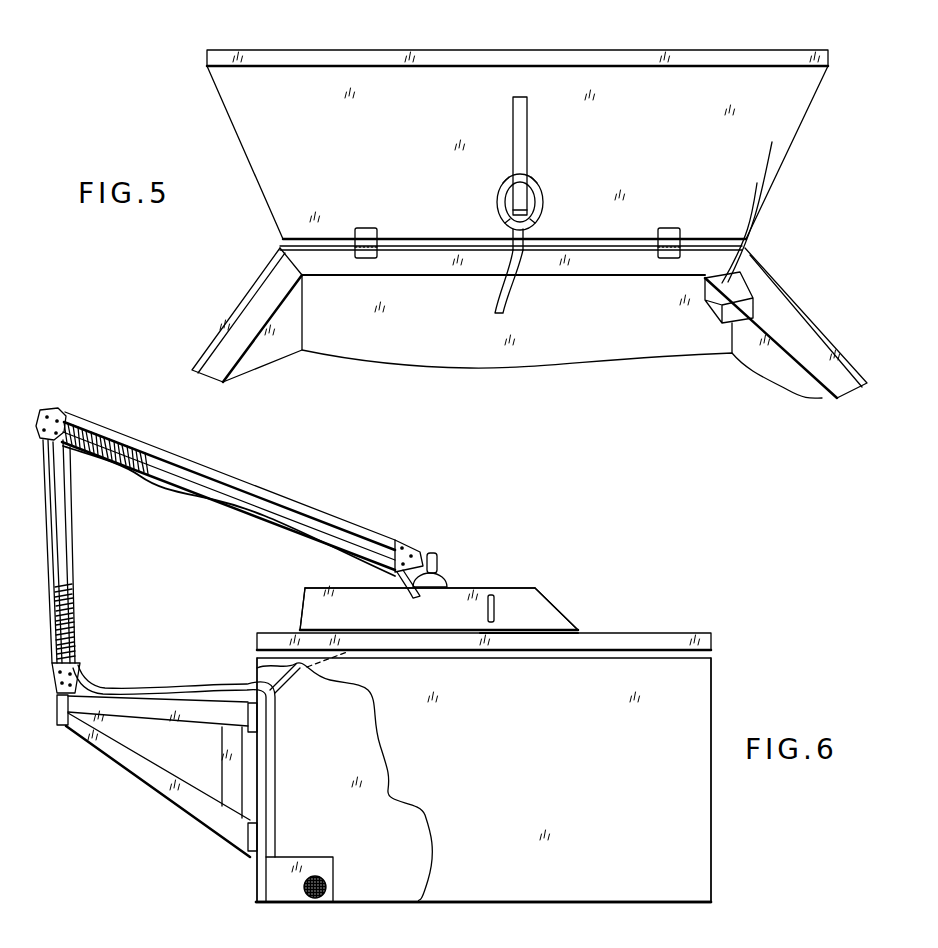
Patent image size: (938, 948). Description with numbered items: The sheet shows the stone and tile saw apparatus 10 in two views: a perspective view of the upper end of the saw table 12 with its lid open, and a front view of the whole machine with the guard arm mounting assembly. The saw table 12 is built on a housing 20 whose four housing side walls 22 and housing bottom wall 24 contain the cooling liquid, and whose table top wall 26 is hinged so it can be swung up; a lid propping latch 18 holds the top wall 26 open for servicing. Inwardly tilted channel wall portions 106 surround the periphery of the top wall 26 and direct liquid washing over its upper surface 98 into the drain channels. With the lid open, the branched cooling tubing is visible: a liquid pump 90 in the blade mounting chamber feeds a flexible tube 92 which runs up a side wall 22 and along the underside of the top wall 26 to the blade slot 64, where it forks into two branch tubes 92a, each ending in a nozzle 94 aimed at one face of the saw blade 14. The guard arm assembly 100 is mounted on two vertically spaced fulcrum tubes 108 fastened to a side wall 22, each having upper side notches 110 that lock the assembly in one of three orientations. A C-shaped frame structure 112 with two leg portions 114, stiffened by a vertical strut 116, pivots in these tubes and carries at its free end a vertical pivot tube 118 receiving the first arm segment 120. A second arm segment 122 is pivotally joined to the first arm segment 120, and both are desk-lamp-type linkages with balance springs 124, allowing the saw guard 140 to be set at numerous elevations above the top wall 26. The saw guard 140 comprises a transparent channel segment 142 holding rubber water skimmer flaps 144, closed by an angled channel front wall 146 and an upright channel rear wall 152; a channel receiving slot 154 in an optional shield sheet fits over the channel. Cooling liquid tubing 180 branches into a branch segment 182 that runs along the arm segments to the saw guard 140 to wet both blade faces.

In FIG. 6, the stone and tile saw apparatus 10 is at (659, 539).
In FIG. 5, the saw table 12 is at (517, 119).
In FIG. 6, the saw table 12 is at (522, 614).
In FIG. 6, the saw blade 14 is at (451, 636).
In FIG. 5, the lid propping latch 18 is at (755, 236).
In FIG. 5, the housing 20 is at (258, 284).
In FIG. 6, the housing 20 is at (713, 793).
In FIG. 5, the housing side walls 22 is at (264, 358).
In FIG. 6, the housing side walls 22 is at (256, 878).
In FIG. 6, the housing bottom wall 24 is at (498, 905).
In FIG. 5, the table top wall 26 is at (676, 50).
In FIG. 6, the table top wall 26 is at (631, 637).
In FIG. 5, the blade slot 64 is at (528, 115).
In FIG. 6, the liquid pump 90 is at (338, 868).
In FIG. 5, the flexible tube 92 is at (508, 309).
In FIG. 5, the branch tubes 92a is at (498, 196).
In FIG. 5, the nozzle 94 is at (505, 177).
In FIG. 6, the upper surface 98 is at (578, 630).
In FIG. 6, the guard arm assembly 100 is at (136, 399).
In FIG. 5, the inwardly tilted channel wall portions 106 is at (232, 331).
In FIG. 6, the inwardly tilted channel wall portions 106 is at (713, 698).
In FIG. 6, the fulcrum tubes 108 is at (257, 716).
In FIG. 6, the upper side notches 110 is at (283, 941).
In FIG. 6, the C-shaped frame structure 112 is at (97, 750).
In FIG. 6, the leg portions 114 is at (158, 713).
In FIG. 6, the frame structure vertical strut 116 is at (222, 758).
In FIG. 6, the vertical pivot tube 118 is at (62, 727).
In FIG. 6, the first arm segment 120 is at (48, 567).
In FIG. 6, the second arm segment 122 is at (178, 463).
In FIG. 6, the balance springs 124 is at (56, 410).
In FIG. 6, the saw guard 140 is at (312, 588).
In FIG. 6, the transparent channel segment 142 is at (452, 592).
In FIG. 6, the rubber water skimmer flaps 144 is at (488, 608).
In FIG. 6, the channel front wall 146 is at (548, 602).
In FIG. 6, the upright channel rear wall 152 is at (300, 610).
In FIG. 6, the channel receiving slot 154 is at (478, 586).
In FIG. 6, the cooling liquid tubing 180 is at (155, 686).
In FIG. 6, the branch segment 182 is at (108, 468).